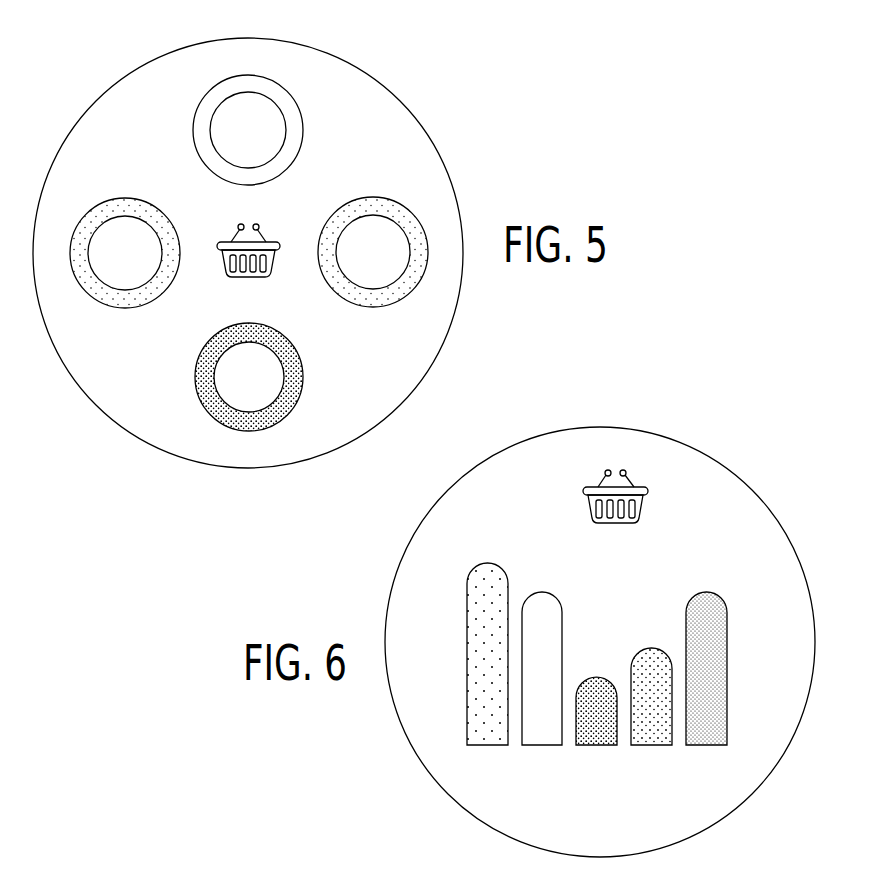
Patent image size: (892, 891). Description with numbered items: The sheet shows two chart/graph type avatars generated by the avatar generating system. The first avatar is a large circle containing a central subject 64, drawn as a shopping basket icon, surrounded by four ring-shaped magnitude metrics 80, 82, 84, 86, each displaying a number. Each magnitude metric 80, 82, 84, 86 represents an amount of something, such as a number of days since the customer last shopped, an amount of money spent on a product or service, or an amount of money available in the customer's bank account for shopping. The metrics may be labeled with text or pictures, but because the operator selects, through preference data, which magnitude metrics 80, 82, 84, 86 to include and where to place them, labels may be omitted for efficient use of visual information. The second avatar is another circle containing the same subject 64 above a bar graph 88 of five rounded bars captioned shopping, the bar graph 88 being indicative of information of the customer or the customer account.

In FIG. 5, the subject 64 is at (251, 234).
In FIG. 6, the subject 64 is at (632, 481).
In FIG. 5, the magnitude metric 80 is at (303, 133).
In FIG. 5, the magnitude metric 82 is at (372, 308).
In FIG. 5, the magnitude metric 84 is at (196, 376).
In FIG. 5, the magnitude metric 86 is at (126, 198).
In FIG. 6, the bar graph 88 is at (746, 693).